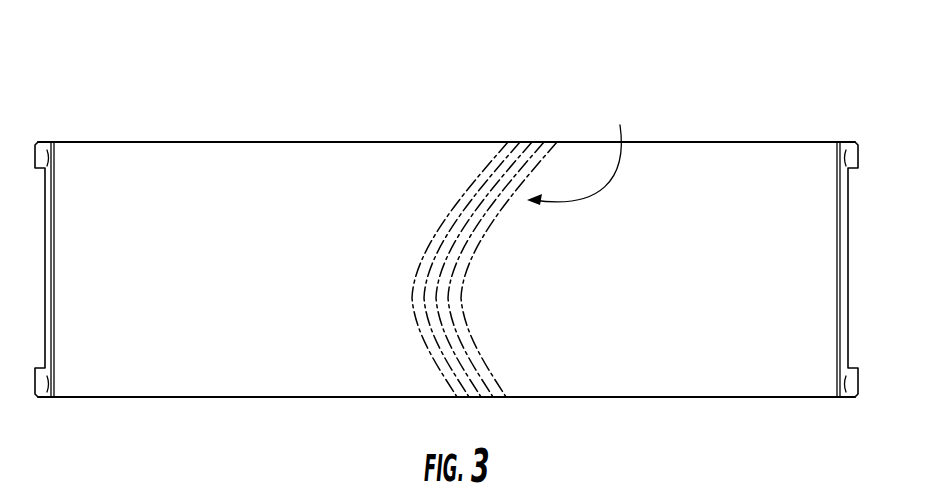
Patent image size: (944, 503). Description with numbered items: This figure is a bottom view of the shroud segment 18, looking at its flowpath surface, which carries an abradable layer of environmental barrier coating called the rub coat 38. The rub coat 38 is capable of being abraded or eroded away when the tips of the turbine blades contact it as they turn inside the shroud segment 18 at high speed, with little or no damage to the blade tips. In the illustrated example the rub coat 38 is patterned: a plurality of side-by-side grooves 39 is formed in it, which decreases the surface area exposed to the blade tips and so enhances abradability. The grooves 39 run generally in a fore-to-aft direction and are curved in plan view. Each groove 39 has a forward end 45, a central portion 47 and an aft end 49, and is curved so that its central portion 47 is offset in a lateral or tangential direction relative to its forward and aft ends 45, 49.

The shroud segment 18 is at (550, 58).
The rub coat 38 is at (123, 190).
The grooves 39 is at (578, 152).
The forward end 45 is at (513, 397).
The central portion 47 is at (461, 292).
The aft end 49 is at (563, 142).